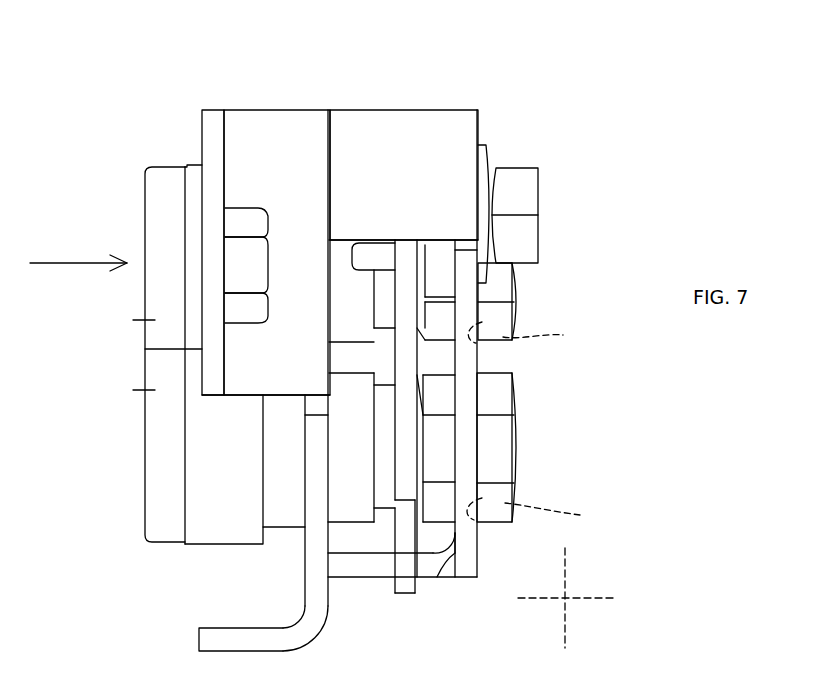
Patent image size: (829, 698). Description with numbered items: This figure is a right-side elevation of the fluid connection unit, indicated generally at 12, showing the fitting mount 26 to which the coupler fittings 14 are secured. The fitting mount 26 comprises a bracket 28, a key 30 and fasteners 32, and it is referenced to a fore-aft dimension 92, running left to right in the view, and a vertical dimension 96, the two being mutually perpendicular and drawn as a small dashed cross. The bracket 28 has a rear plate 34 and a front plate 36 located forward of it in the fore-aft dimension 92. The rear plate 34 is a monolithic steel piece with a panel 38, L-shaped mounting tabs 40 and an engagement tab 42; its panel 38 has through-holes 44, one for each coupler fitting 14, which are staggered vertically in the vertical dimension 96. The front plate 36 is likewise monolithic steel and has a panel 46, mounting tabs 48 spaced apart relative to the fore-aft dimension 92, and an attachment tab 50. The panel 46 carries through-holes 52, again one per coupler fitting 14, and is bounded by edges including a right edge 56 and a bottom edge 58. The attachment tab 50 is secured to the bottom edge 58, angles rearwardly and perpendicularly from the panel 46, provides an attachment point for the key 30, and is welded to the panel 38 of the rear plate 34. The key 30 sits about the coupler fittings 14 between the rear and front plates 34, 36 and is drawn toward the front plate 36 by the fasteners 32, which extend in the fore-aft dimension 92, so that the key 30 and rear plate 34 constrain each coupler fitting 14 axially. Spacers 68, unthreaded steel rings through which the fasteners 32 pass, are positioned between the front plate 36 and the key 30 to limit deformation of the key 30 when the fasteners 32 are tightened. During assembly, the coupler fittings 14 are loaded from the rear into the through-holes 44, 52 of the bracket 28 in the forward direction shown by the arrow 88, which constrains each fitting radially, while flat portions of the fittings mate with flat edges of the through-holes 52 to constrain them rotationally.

The mounting assembly 12 is at (78, 98).
The fitting mount 26 is at (178, 102).
The mounting tab 40 is at (208, 147).
The rear plate 34 is at (288, 118).
The mounting tab 48 is at (398, 130).
The fastener 32 is at (528, 193).
The spacer 68 is at (438, 253).
The front plate 36 is at (467, 358).
The panel 46 is at (480, 312).
The through-hole 52 is at (539, 424).
The key 30 is at (440, 392).
The right edge 56 is at (467, 448).
The direction arrow 88 is at (78, 263).
The coupler fitting 14 is at (145, 320).
The through-hole 44 is at (320, 520).
The panel 38 is at (313, 563).
The engagement tab 42 is at (199, 637).
The bracket 28 is at (322, 632).
The attachment tab 50 is at (360, 565).
The bottom edge 58 is at (465, 578).
The fore-aft dimension 92 is at (588, 598).
The vertical dimension 96 is at (567, 620).